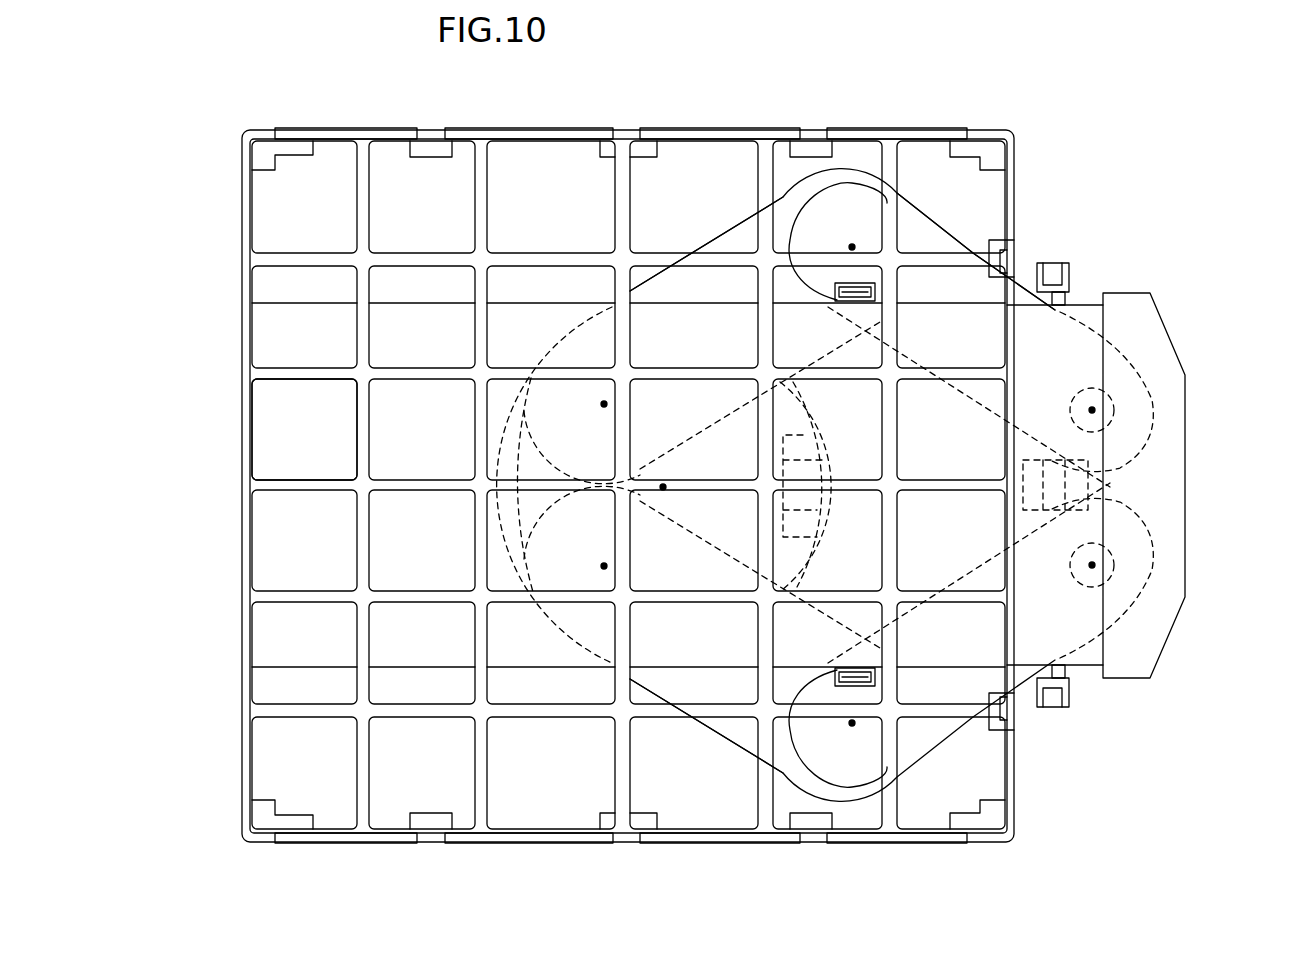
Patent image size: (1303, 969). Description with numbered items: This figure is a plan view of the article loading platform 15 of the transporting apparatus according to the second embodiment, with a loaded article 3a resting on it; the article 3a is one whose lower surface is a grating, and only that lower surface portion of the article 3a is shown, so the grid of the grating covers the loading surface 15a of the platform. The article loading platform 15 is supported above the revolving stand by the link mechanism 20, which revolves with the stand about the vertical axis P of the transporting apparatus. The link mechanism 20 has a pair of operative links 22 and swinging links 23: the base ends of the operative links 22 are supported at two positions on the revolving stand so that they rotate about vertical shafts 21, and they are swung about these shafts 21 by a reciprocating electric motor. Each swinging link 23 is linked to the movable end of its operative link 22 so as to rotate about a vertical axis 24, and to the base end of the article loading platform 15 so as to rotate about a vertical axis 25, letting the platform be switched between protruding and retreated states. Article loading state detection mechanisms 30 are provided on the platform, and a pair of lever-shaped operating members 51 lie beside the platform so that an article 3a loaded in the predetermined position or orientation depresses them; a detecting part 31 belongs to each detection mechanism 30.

The article 3a is at (240, 680).
The article loading platform 15 is at (285, 542).
The loading surface 15a is at (295, 421).
The link mechanism 20 is at (697, 241).
The vertical shafts 21 is at (604, 404).
The operative links 22 is at (733, 245).
The swinging links 23 is at (1153, 372).
The vertical axis 24 is at (853, 245).
The vertical axis 25 is at (1092, 410).
The article loading state detection mechanism 30 is at (958, 217).
The sensor 31 is at (1053, 263).
The operating members 51 is at (838, 287).
The axis P is at (663, 487).